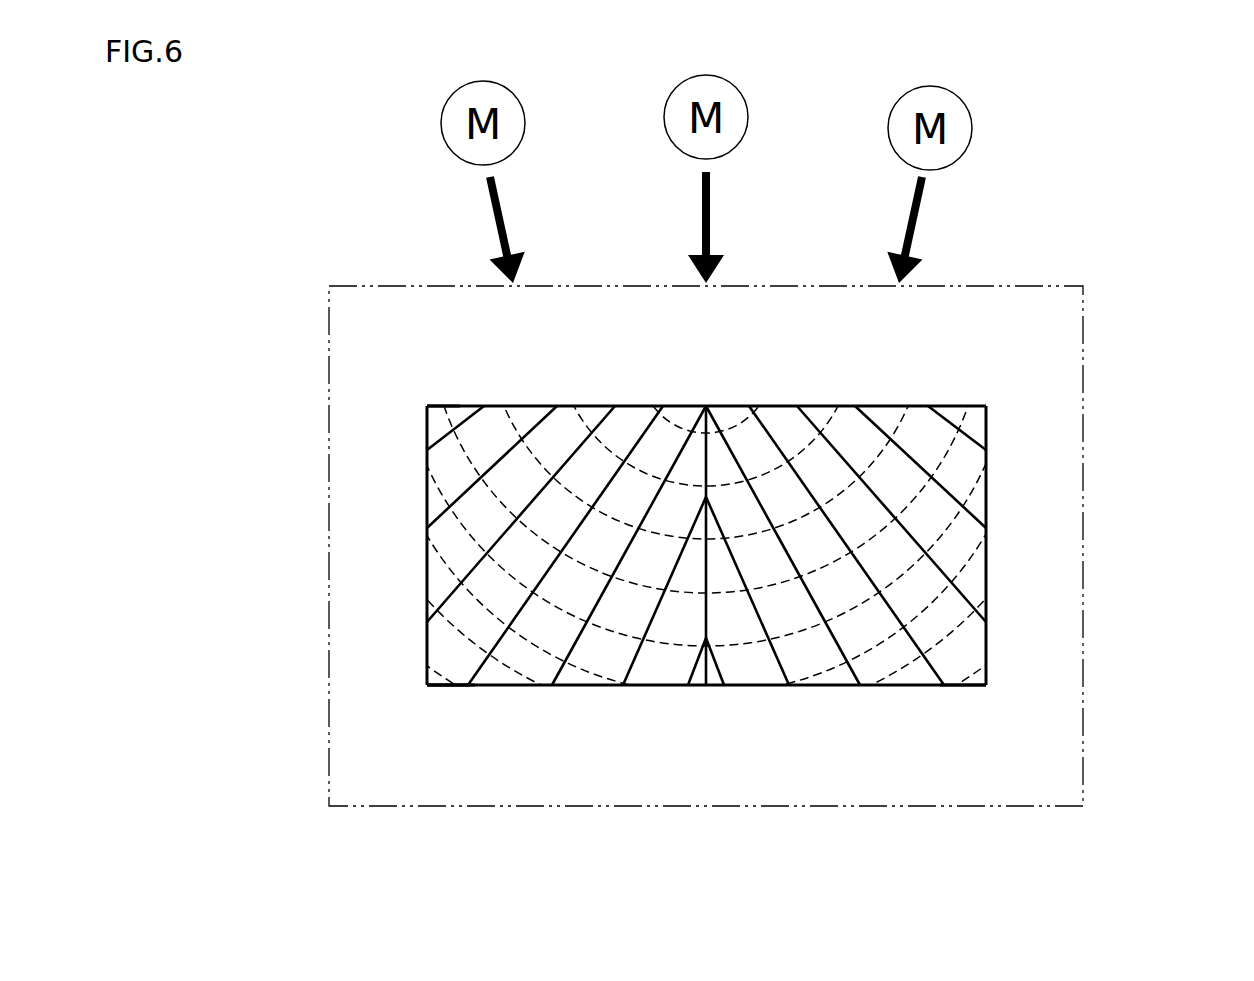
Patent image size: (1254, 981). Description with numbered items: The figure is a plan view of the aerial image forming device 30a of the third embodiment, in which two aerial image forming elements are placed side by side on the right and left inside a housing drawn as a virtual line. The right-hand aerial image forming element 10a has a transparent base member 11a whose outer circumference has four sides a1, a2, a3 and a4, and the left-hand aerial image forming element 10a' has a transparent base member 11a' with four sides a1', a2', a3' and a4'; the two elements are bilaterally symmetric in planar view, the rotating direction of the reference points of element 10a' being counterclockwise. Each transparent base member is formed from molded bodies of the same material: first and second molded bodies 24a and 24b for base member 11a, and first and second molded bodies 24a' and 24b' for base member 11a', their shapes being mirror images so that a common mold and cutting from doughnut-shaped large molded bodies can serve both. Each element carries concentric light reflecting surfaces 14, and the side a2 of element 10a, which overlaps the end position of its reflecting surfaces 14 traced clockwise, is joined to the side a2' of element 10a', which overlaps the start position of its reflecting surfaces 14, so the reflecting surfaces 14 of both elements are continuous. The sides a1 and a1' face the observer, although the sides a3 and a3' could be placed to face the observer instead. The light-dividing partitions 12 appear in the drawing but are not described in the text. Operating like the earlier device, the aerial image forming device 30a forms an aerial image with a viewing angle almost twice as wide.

The aerial image forming element 10a is at (802, 708).
The aerial image forming element 10a' is at (352, 708).
The transparent base member 11a is at (1075, 545).
The transparent base member 11a' is at (336, 545).
The partition wall 12 is at (455, 501).
The concentric light reflecting surface 14 is at (452, 408).
The first molded body 24a is at (968, 738).
The first molded body 24a' is at (458, 739).
The second molded body 24b is at (799, 384).
The second molded body 24b' is at (350, 383).
The aerial image forming device 30a is at (1087, 499).
The side a1 is at (797, 371).
The side a1' is at (613, 371).
The side a2 is at (690, 581).
The side a2' is at (729, 690).
The side a3 is at (875, 732).
The side a3' is at (537, 732).
The side a4 is at (1014, 545).
The side a4' is at (399, 540).